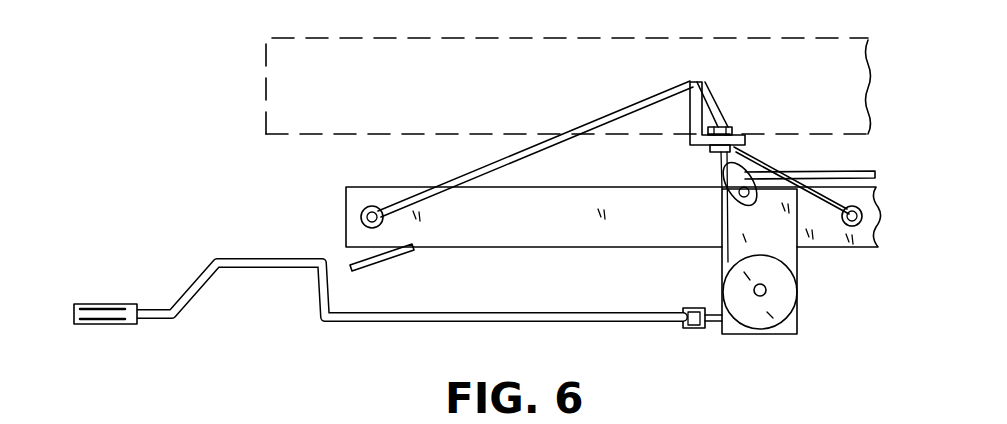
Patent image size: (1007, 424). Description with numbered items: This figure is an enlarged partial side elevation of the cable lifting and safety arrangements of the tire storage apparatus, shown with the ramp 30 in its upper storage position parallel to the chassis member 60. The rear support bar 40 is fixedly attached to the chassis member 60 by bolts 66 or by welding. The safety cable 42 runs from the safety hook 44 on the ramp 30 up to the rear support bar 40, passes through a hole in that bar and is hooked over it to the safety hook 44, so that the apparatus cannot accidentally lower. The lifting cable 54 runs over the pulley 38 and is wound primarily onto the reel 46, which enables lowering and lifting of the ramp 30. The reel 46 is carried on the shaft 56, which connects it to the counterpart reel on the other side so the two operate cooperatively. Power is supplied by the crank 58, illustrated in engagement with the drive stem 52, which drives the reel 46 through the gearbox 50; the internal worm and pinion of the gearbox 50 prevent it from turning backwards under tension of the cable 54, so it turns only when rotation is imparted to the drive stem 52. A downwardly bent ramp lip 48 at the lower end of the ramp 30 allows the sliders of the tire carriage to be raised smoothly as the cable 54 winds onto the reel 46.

The ramp 30 is at (548, 232).
The pulley 38 is at (726, 182).
The rear support bar 40 is at (738, 137).
The safety cable 42 is at (708, 95).
The safety hook 44 is at (360, 217).
The reel 46 is at (790, 300).
The ramp lip 48 is at (375, 262).
The gearbox 50 is at (782, 333).
The drive stem 52 is at (693, 308).
The cable 54 is at (832, 150).
The shaft 56 is at (760, 284).
The crank 58 is at (198, 298).
The chassis member 60 is at (408, 134).
The bolts 66 is at (730, 127).